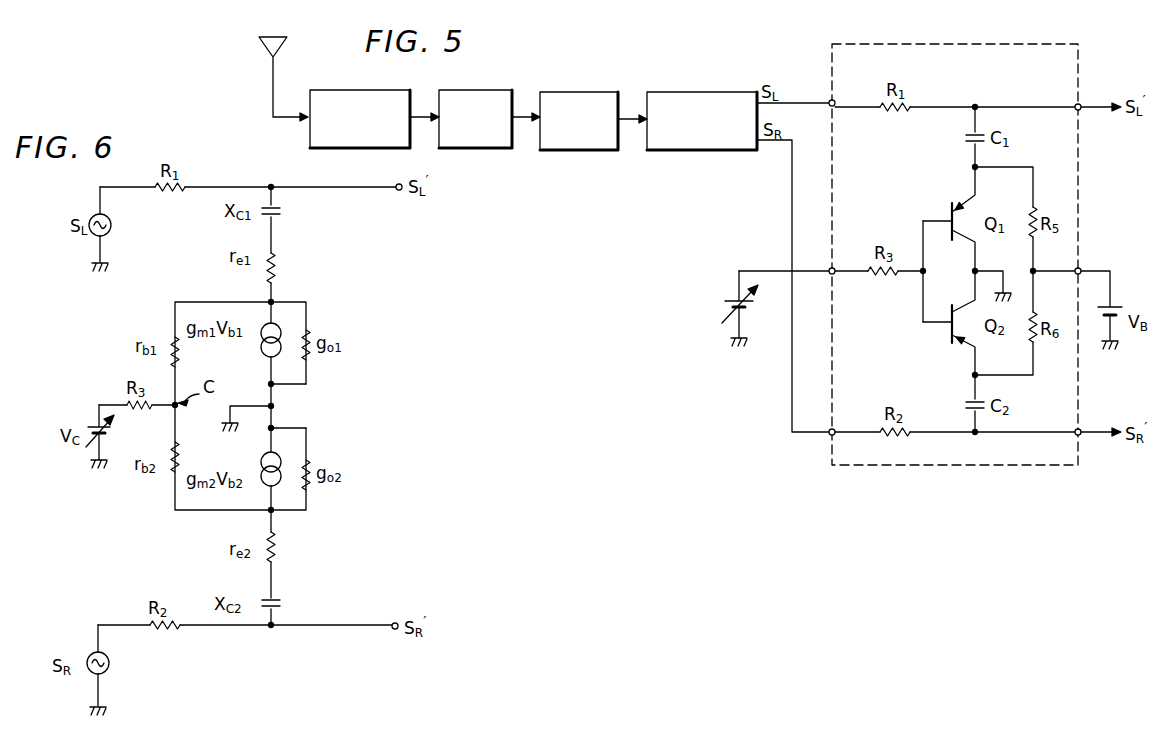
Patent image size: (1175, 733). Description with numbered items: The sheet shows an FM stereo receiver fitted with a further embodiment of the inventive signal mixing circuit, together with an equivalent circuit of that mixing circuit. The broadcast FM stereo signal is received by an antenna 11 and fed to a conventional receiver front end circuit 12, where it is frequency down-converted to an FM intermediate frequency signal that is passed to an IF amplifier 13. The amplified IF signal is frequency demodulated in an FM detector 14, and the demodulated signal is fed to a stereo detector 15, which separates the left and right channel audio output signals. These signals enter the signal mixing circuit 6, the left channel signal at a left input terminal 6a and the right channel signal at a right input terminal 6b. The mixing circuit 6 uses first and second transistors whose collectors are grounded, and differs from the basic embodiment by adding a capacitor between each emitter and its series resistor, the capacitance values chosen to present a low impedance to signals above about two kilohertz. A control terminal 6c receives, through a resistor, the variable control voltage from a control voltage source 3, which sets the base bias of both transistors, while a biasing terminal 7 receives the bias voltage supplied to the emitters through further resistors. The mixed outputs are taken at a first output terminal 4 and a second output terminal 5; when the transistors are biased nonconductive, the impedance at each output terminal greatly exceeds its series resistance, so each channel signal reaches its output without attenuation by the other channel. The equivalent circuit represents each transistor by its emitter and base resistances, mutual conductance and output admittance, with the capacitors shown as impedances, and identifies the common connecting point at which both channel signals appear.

In FIG. 5, the antenna 11 is at (259, 46).
In FIG. 5, the front end circuit 12 is at (357, 150).
In FIG. 5, the IF amplifier 13 is at (476, 150).
In FIG. 5, the FM detector 14 is at (591, 150).
In FIG. 5, the stereo detector 15 is at (708, 150).
In FIG. 5, the signal mixing circuit 6 is at (943, 467).
In FIG. 5, the left input terminal 6a is at (829, 101).
In FIG. 5, the right input terminal 6b is at (829, 435).
In FIG. 5, the control terminal 6c is at (829, 274).
In FIG. 5, the first output terminal 4 is at (1080, 105).
In FIG. 6, the first output terminal 4 is at (399, 196).
In FIG. 5, the second output terminal 5 is at (1082, 436).
In FIG. 6, the second output terminal 5 is at (396, 635).
In FIG. 5, the biasing terminal 7 is at (1081, 269).
In FIG. 5, the control voltage source 3 is at (728, 307).